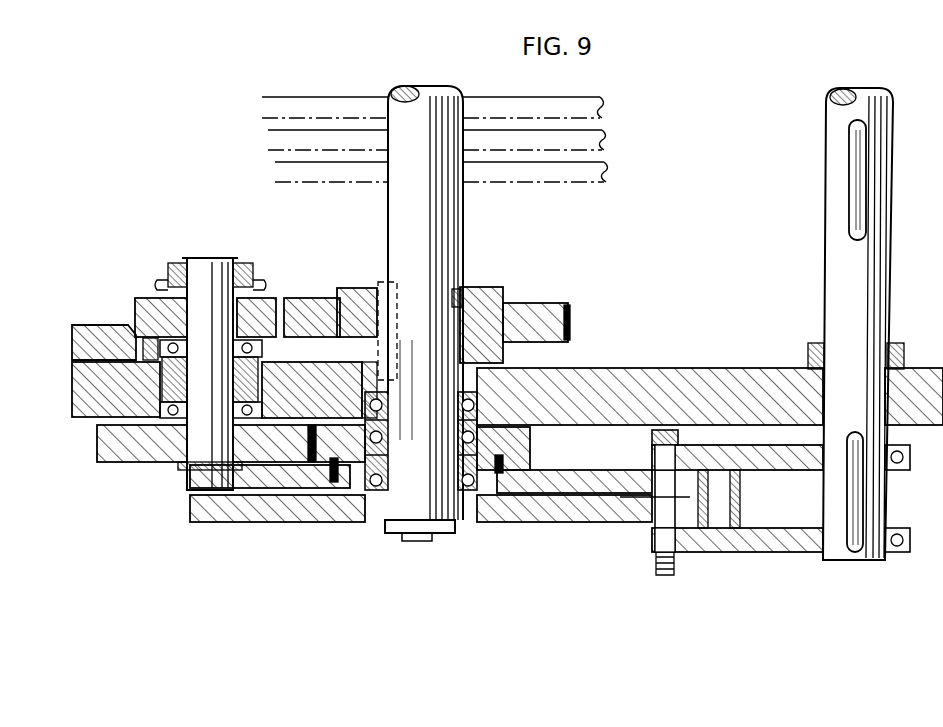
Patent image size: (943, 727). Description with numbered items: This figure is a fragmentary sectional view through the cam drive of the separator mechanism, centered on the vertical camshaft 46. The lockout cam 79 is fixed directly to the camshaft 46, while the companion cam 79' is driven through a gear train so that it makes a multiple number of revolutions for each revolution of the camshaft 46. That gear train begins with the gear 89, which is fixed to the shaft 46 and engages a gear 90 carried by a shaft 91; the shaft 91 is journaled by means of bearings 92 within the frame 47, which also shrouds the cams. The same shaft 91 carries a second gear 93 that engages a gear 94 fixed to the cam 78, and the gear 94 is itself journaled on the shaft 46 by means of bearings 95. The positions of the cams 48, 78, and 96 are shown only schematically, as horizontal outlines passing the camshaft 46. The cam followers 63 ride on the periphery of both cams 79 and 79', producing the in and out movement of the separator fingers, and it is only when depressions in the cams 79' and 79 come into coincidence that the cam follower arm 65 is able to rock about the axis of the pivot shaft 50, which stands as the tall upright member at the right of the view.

The camshaft 46 is at (416, 198).
The frame 47 is at (688, 379).
The cam 48 is at (605, 171).
The pivot shaft 50 is at (866, 283).
The cam follower 63 is at (648, 516).
The cam follower arm 65 is at (790, 543).
The cam 78 is at (604, 140).
The lockout cam 79 is at (421, 527).
The cam 79' is at (242, 487).
The gear 89 is at (459, 293).
The gear 90 is at (156, 307).
The shaft 91 is at (211, 273).
The bearings 92 is at (134, 340).
The second gear 93 is at (113, 442).
The gear 94 is at (530, 442).
The bearings 95 is at (506, 310).
The cam 96 is at (606, 103).